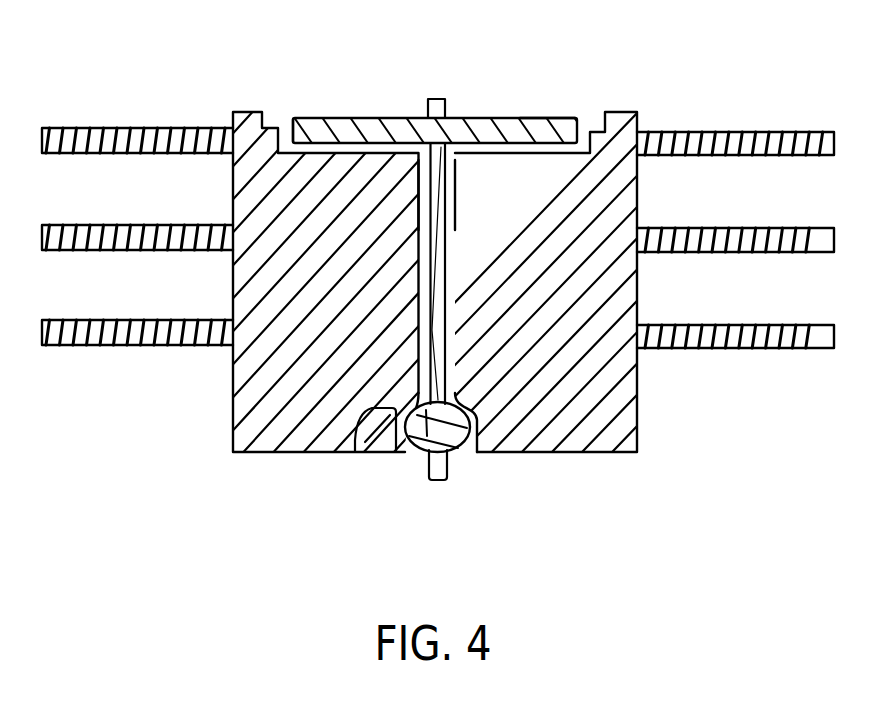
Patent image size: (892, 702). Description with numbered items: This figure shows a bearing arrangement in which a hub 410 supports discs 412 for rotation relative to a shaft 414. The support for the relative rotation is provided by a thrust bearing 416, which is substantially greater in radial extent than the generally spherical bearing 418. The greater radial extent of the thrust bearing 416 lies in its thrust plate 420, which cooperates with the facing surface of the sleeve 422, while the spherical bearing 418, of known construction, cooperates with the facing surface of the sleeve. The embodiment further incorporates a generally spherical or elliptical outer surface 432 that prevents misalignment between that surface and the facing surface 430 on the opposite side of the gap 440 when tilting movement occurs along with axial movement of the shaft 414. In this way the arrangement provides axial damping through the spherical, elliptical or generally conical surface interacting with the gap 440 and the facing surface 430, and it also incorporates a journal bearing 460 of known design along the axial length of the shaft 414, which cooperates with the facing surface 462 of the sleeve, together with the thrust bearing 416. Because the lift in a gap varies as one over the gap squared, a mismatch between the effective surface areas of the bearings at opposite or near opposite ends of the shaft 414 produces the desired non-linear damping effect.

The hub 410 is at (610, 430).
The discs 412 is at (718, 132).
The shaft 414 is at (441, 100).
The thrust bearing 416 is at (562, 119).
The spherical bearing 418 is at (457, 455).
The thrust plate 420 is at (294, 126).
The sleeve 422 is at (326, 150).
The facing surface 430 is at (353, 452).
The spherical or elliptical outer surface 432 is at (422, 446).
The gap 440 is at (478, 456).
The journal bearing 460 is at (456, 227).
The facing surface of the sleeve 462 is at (417, 203).